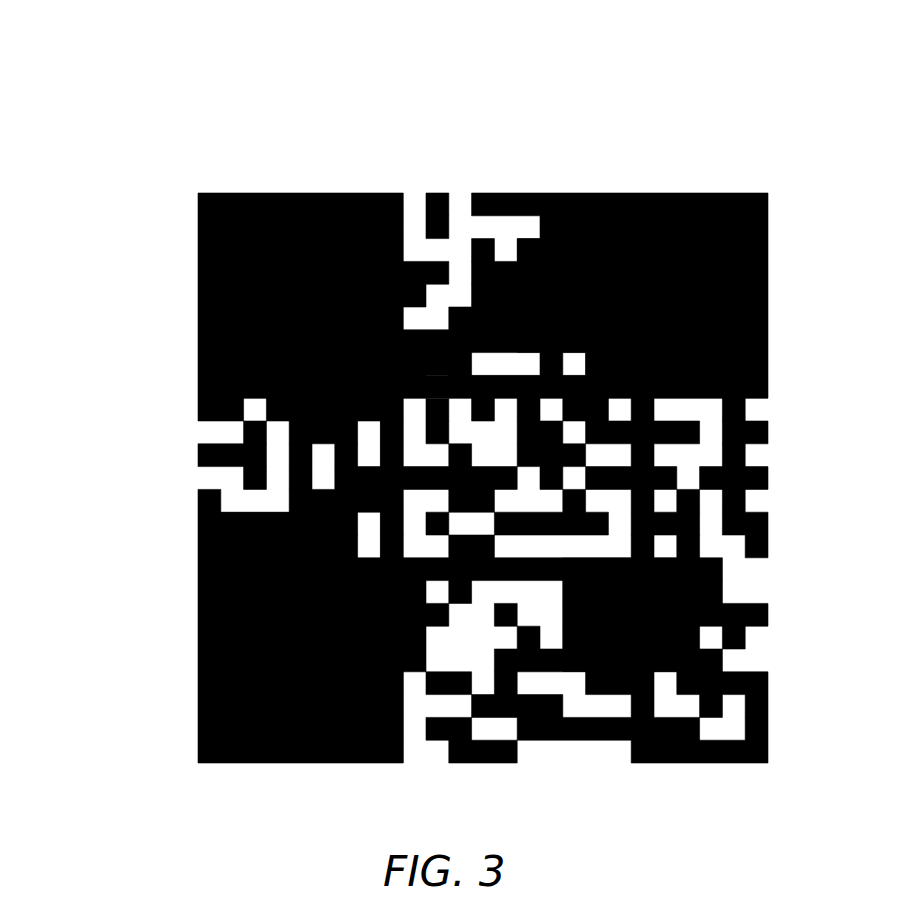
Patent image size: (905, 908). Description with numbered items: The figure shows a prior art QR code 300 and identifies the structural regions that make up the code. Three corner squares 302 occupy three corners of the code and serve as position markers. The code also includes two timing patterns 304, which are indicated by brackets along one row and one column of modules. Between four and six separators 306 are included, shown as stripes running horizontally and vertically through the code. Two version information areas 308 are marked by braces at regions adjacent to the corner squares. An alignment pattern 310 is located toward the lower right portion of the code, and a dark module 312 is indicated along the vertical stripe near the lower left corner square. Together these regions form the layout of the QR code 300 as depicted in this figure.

The QR code 300 is at (82, 86).
The corner squares 302 is at (190, 187).
The timing patterns 304 is at (332, 573).
The separators 306 is at (378, 173).
The version information areas 308 is at (577, 188).
The alignment pattern 310 is at (670, 542).
The dark module 312 is at (366, 572).